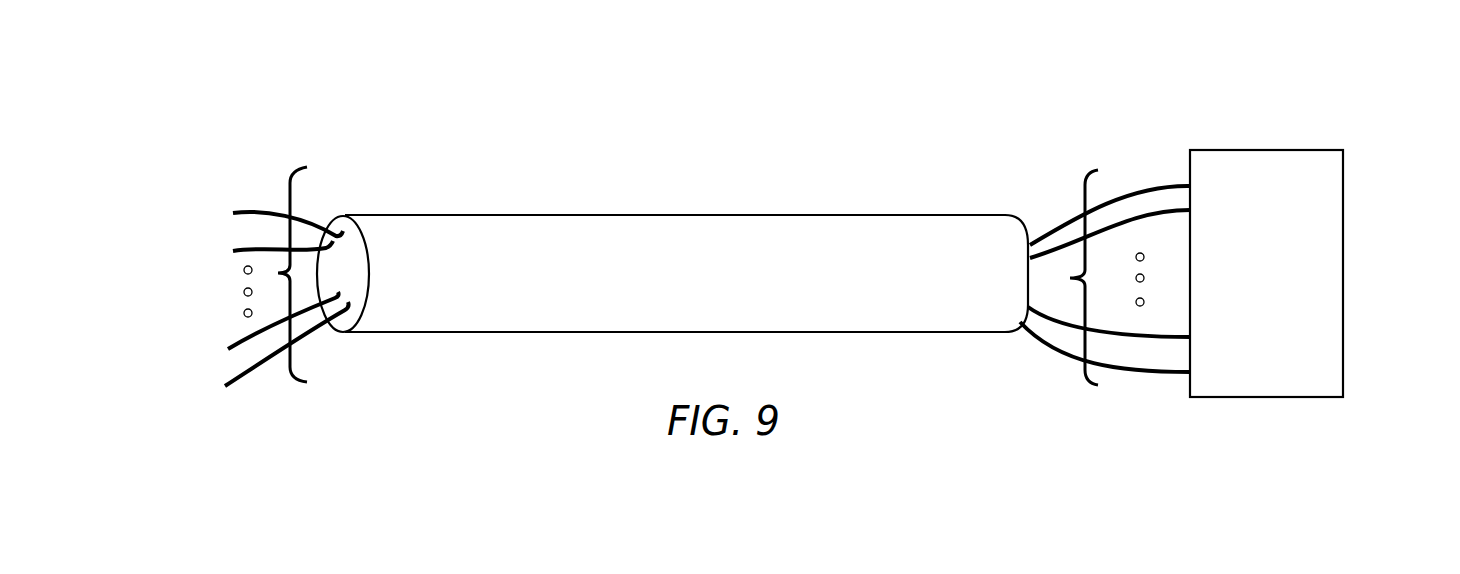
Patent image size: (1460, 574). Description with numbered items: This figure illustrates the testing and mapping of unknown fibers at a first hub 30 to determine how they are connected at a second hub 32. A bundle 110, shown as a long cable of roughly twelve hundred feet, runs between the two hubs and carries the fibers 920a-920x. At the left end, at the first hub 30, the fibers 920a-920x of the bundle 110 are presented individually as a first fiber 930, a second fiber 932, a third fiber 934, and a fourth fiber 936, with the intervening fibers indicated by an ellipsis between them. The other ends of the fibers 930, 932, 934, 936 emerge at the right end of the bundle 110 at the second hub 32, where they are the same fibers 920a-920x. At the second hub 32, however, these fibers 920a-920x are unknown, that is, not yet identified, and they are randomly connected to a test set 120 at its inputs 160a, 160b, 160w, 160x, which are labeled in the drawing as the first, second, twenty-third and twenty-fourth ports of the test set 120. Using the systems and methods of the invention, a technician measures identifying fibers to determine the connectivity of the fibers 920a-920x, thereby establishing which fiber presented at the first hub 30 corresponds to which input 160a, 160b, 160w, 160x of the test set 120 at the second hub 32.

The first hub 30 is at (288, 140).
The second hub 32 is at (1106, 128).
The bundle 110 is at (783, 243).
The test set 120 is at (1313, 160).
The input 160a is at (1268, 182).
The input 160b is at (1272, 213).
The input 160w is at (1287, 345).
The input 160x is at (1287, 377).
The fibers 920a-920x is at (287, 205).
The first fiber 930 is at (233, 212).
The second fiber 932 is at (236, 249).
The third fiber 934 is at (236, 345).
The fourth fiber 936 is at (236, 380).